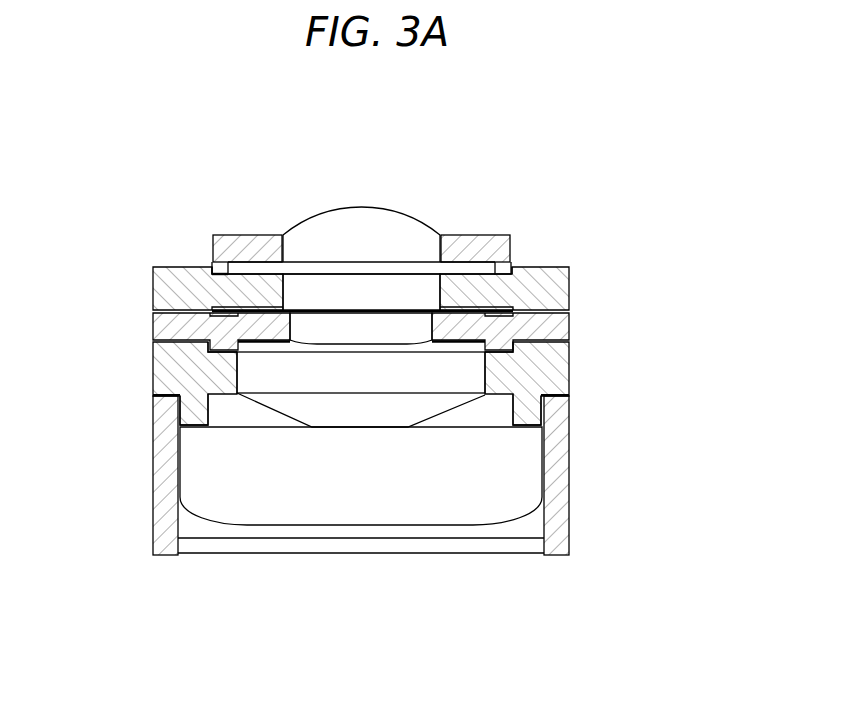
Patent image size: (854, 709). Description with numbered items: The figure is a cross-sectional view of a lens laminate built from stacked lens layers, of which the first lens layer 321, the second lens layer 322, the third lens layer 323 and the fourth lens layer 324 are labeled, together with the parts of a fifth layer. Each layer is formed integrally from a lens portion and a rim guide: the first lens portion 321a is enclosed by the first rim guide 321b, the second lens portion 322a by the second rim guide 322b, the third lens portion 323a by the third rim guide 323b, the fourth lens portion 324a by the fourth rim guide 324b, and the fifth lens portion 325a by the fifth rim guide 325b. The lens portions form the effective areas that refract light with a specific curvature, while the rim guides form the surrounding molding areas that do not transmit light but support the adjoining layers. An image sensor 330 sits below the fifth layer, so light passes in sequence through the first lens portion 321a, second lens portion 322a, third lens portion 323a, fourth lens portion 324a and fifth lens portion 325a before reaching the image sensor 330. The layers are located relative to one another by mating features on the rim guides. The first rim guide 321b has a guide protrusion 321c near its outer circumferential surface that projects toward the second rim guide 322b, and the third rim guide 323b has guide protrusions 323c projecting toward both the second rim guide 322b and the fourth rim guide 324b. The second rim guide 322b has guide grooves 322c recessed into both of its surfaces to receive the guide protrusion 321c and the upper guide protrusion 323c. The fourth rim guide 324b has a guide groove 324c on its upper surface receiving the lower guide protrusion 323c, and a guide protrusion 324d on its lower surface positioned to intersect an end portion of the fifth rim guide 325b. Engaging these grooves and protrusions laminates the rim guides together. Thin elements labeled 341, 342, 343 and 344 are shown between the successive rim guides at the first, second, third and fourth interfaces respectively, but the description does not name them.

The first lens layer 321 is at (383, 187).
The first lens portion 321a is at (361, 207).
The first rim guide 321b is at (498, 245).
The guide protrusion 321c is at (512, 265).
The second lens layer 322 is at (435, 277).
The second lens portion 322a is at (361, 292).
The second rim guide 322b is at (557, 290).
The guide grooves 322c is at (505, 276).
The third lens layer 323 is at (435, 358).
The third lens portion 323a is at (361, 328).
The third rim guide 323b is at (500, 327).
The guide protrusions 323c is at (508, 313).
The fourth lens layer 324 is at (360, 498).
The fourth lens portion 324a is at (361, 389).
The fourth rim guide 324b is at (200, 378).
The guide groove 324c is at (218, 352).
The guide protrusion 324d is at (193, 417).
The fifth lens portion 325a is at (361, 476).
The fifth rim guide 325b is at (163, 530).
The image sensor 330 is at (403, 545).
The first spacer 341 is at (216, 270).
The second spacer 342 is at (153, 311).
The third spacer 343 is at (153, 341).
The fourth spacer 344 is at (153, 396).